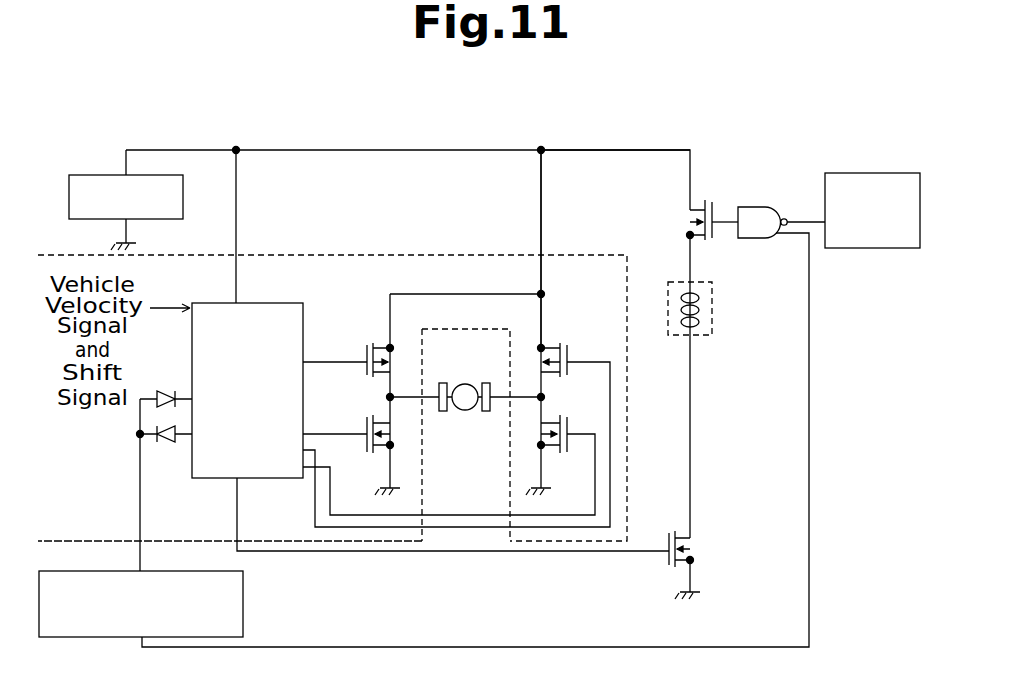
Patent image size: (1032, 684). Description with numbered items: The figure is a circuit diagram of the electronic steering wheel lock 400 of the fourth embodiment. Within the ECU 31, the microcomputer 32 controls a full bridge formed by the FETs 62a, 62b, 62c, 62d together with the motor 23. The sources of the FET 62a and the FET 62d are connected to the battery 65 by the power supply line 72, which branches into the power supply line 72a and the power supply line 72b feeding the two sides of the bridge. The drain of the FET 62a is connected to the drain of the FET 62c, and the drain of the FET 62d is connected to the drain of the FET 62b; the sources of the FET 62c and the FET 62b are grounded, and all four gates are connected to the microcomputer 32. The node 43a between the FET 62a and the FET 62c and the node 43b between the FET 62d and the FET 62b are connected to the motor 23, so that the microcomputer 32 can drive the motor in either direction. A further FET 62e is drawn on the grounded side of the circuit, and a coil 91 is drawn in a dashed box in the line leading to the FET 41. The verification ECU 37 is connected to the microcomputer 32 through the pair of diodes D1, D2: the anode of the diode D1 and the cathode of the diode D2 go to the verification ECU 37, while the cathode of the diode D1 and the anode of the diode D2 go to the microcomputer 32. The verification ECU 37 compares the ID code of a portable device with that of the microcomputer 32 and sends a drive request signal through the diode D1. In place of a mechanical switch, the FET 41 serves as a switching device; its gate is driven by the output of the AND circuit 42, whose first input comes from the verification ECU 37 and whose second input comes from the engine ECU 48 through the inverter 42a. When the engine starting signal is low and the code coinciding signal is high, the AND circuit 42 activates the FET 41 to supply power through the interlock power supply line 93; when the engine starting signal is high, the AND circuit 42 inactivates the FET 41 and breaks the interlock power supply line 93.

The electronic steering wheel lock 400 is at (750, 90).
The battery 65 is at (97, 175).
The ECU 31 is at (432, 255).
The microcomputer 32 is at (200, 481).
The diode D1 is at (155, 390).
The diode D2 is at (166, 444).
The power supply line 72a is at (390, 298).
The power supply line 72b is at (541, 311).
The power supply line 72 is at (541, 232).
The interlock power supply line 93 is at (624, 151).
The FET 62a is at (367, 352).
The FET 62b is at (566, 452).
The FET 62c is at (368, 452).
The FET 62d is at (574, 344).
The transistor 62e is at (666, 556).
The motor 23 is at (462, 384).
The node 43a is at (390, 397).
The node 43b is at (541, 397).
The FET 41 is at (714, 208).
The AND circuit 42 is at (769, 240).
The inverter 42a is at (785, 210).
The engine ECU 48 is at (878, 173).
The relay coil 91 is at (712, 294).
The verification ECU 37 is at (243, 612).